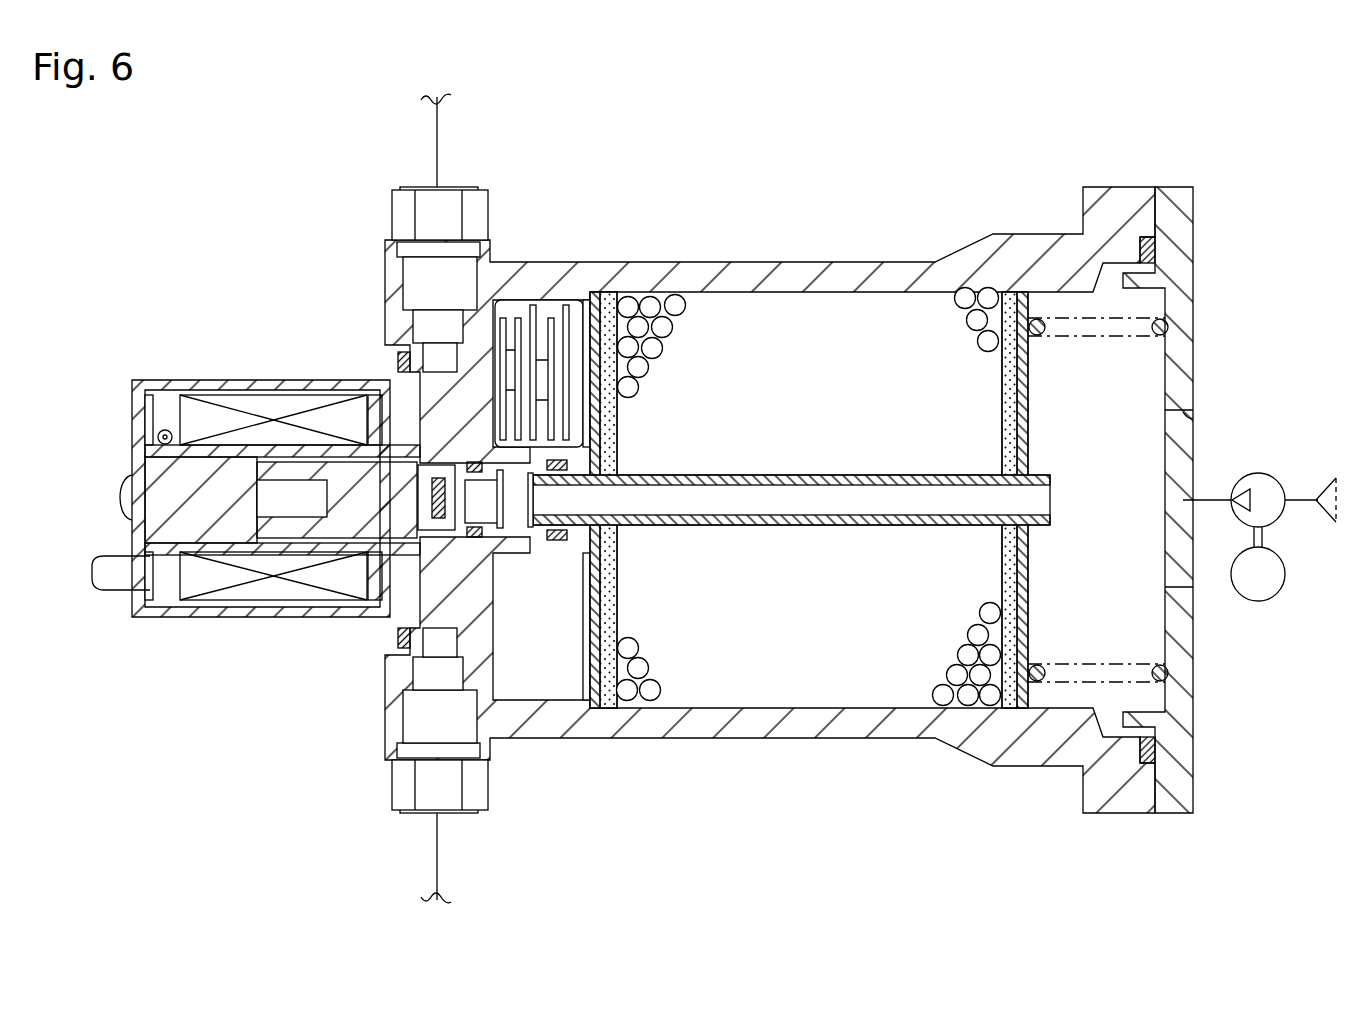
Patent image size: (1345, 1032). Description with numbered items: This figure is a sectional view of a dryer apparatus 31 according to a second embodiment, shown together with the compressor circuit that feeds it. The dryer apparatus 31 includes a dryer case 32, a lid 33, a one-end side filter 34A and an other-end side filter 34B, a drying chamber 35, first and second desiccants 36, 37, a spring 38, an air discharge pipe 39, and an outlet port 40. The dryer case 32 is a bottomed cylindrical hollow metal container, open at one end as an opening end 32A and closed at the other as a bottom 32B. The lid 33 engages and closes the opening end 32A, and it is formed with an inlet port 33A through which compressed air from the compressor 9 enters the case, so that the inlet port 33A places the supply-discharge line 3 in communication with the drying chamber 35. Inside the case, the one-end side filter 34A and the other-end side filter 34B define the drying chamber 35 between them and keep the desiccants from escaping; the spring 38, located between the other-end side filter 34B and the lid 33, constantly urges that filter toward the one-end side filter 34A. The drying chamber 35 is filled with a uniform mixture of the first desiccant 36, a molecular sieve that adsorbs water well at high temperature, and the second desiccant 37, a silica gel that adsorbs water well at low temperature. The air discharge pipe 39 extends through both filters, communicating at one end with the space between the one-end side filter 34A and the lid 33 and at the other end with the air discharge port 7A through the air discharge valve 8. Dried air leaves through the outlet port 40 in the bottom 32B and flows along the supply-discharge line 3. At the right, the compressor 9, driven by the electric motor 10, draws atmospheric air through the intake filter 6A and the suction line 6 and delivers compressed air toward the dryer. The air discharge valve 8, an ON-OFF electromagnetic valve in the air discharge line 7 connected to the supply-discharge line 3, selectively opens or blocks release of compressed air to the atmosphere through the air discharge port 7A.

The supply-discharge line 3 is at (1205, 498).
The suction line 6 is at (1294, 503).
The intake filter 6A is at (1328, 480).
The air discharge line 7 is at (435, 852).
The air discharge port 7A is at (445, 778).
The air discharge valve 8 is at (206, 490).
The compressor 9 is at (1258, 473).
The electric motor 10 is at (1258, 601).
The dryer apparatus 31 is at (973, 214).
The dryer case 32 is at (902, 262).
The opening end 32A is at (1160, 768).
The bottom 32B is at (398, 378).
The lid 33 is at (1181, 236).
The inlet port 33A is at (1195, 418).
The one-end side filter 34A is at (1010, 695).
The other-end side filter 34B is at (607, 695).
The drying chamber 35 is at (860, 352).
The first desiccant 36 is at (966, 298).
The second desiccant 37 is at (649, 305).
The spring 38 is at (1036, 318).
The air discharge pipe 39 is at (798, 500).
The outlet port 40 is at (437, 212).